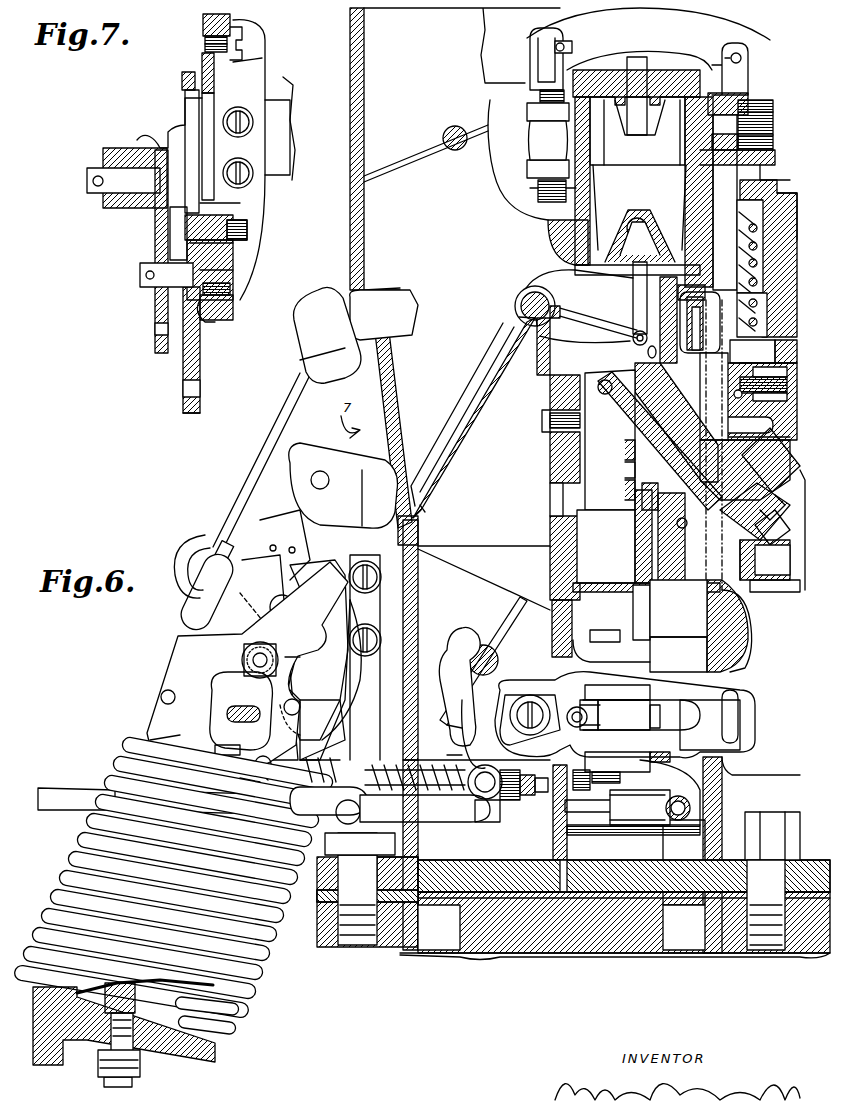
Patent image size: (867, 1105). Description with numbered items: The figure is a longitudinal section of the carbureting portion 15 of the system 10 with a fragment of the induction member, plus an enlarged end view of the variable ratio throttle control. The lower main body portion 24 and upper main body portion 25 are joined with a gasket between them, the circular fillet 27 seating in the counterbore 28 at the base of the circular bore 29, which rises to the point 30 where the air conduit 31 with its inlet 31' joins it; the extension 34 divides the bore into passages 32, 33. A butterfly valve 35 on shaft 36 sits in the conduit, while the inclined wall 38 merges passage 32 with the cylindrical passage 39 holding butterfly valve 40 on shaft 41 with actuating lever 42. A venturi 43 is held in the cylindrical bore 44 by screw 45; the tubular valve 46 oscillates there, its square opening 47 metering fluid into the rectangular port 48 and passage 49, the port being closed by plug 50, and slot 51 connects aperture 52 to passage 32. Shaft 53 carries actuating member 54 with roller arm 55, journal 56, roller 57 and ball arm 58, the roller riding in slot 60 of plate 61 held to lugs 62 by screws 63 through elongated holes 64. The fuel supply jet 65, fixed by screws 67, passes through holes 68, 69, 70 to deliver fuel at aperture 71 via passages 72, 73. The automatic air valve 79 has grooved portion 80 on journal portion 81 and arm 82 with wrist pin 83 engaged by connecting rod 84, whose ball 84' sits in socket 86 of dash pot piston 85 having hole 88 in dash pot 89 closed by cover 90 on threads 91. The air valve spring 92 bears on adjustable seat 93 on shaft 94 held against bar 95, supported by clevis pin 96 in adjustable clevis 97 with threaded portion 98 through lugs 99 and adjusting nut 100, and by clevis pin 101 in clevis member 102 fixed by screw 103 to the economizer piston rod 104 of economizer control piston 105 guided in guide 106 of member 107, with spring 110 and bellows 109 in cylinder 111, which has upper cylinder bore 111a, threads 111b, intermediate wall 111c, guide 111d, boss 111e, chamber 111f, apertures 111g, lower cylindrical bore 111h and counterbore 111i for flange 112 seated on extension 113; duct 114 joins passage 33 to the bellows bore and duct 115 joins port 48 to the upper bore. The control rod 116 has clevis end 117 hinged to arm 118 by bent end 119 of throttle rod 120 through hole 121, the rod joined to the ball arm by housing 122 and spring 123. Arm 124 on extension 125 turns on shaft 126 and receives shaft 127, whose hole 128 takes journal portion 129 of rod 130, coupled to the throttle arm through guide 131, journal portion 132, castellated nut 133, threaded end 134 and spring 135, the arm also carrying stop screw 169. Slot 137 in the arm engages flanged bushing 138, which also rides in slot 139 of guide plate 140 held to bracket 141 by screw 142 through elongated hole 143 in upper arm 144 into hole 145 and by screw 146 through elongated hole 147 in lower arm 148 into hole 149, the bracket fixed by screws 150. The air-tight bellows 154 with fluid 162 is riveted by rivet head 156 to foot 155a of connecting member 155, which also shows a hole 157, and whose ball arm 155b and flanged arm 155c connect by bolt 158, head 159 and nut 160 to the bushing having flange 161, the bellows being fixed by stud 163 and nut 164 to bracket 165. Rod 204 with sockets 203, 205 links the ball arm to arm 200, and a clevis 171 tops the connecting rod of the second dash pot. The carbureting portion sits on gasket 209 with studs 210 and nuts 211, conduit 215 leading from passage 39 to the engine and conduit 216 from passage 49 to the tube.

In FIG. 6, the cutout assembly 10 is at (790, 638).
In FIG. 7, the carbureting portion 15 is at (272, 375).
In FIG. 6, the lower main body portion 24 is at (720, 770).
In FIG. 6, the upper main body portion 25 is at (350, 214).
In FIG. 6, the circular fillet 27 is at (650, 570).
In FIG. 6, the counterbore 28 is at (645, 553).
In FIG. 6, the circular bore 29 is at (633, 322).
In FIG. 6, the junction point 30 is at (465, 392).
In FIG. 6, the air conduit 31 is at (401, 234).
In FIG. 6, the inlet 31' is at (462, 45).
In FIG. 6, the passage 32 is at (457, 486).
In FIG. 6, the passage 33 is at (560, 282).
In FIG. 6, the extension 34 is at (540, 370).
In FIG. 6, the butterfly valve 35 is at (400, 160).
In FIG. 6, the shaft 36 is at (456, 126).
In FIG. 6, the inclined wall 38 is at (484, 578).
In FIG. 6, the cylindrical passage 39 is at (484, 737).
In FIG. 6, the butterfly valve 40 is at (510, 615).
In FIG. 6, the shaft 41 is at (483, 645).
In FIG. 6, the actuating lever 42 is at (447, 650).
In FIG. 6, the venturi 43 is at (587, 443).
In FIG. 6, the cylindrical bore 44 is at (548, 386).
In FIG. 6, the screw 45 is at (543, 428).
In FIG. 6, the tubular valve 46 is at (575, 585).
In FIG. 6, the opening 47 is at (637, 600).
In FIG. 6, the port 48 is at (678, 608).
In FIG. 6, the passage 49 is at (678, 771).
In FIG. 6, the plug 50 is at (742, 635).
In FIG. 6, the slot 51 is at (553, 497).
In FIG. 6, the aperture 52 is at (635, 520).
In FIG. 6, the shaft 53 is at (600, 628).
In FIG. 6, the actuating member 54 is at (617, 726).
In FIG. 6, the roller arm 55 is at (598, 708).
In FIG. 6, the journal 56 is at (570, 718).
In FIG. 6, the roller 57 is at (600, 726).
In FIG. 6, the ball arm 58 is at (655, 723).
In FIG. 6, the slot 60 is at (690, 724).
In FIG. 6, the plate 61 is at (740, 702).
In FIG. 6, the lugs 62 is at (515, 700).
In FIG. 6, the screws 63 is at (535, 700).
In FIG. 6, the elongated holes 64 is at (540, 735).
In FIG. 6, the fuel supply jet 65 is at (625, 383).
In FIG. 6, the screws 67 is at (782, 500).
In FIG. 6, the hole 68 is at (630, 485).
In FIG. 6, the hole 69 is at (630, 468).
In FIG. 6, the hole 70 is at (630, 450).
In FIG. 6, the aperture 71 is at (606, 396).
In FIG. 6, the passages 72 is at (765, 470).
In FIG. 6, the passage 73 is at (752, 555).
In FIG. 6, the automatic air valve 79 is at (520, 420).
In FIG. 6, the grooved portion 80 is at (552, 305).
In FIG. 6, the journal portion 81 is at (520, 305).
In FIG. 6, the arm 82 is at (590, 322).
In FIG. 6, the wrist pin 83 is at (632, 337).
In FIG. 6, the connecting rod 84 is at (637, 274).
In FIG. 6, the ball 84' is at (639, 227).
In FIG. 6, the dash pot piston 85 is at (603, 190).
In FIG. 6, the socket 86 is at (650, 215).
In FIG. 6, the hole 88 is at (640, 210).
In FIG. 6, the dash pot 89 is at (672, 140).
In FIG. 6, the cover 90 is at (720, 40).
In FIG. 6, the threads 91 is at (610, 80).
In FIG. 6, the air valve spring 92 is at (605, 150).
In FIG. 6, the adjustable seat 93 is at (632, 135).
In FIG. 6, the shaft 94 is at (648, 65).
In FIG. 6, the bar 95 is at (690, 28).
In FIG. 6, the clevis pin 96 is at (572, 47).
In FIG. 6, the adjustable clevis 97 is at (530, 64).
In FIG. 6, the threaded portion 98 is at (527, 98).
In FIG. 6, the lugs 99 is at (530, 120).
In FIG. 6, the adjusting nut 100 is at (532, 142).
In FIG. 6, the clevis pin 101 is at (748, 58).
In FIG. 6, the clevis member 102 is at (752, 83).
In FIG. 6, the screw 103 is at (772, 118).
In FIG. 6, the economizer piston rod 104 is at (740, 160).
In FIG. 6, the economizer control piston 105 is at (763, 351).
In FIG. 6, the guide 106 is at (768, 172).
In FIG. 6, the member 107 is at (782, 190).
In FIG. 6, the air-tight bellows 109 is at (748, 417).
In FIG. 6, the spring 110 is at (765, 290).
In FIG. 6, the cylinder 111 is at (782, 455).
In FIG. 6, the upper cylinder bore 111a is at (770, 312).
In FIG. 6, the threads 111b is at (786, 222).
In FIG. 6, the intermediate wall 111c is at (770, 385).
In FIG. 6, the guide 111d is at (740, 396).
In FIG. 6, the boss 111e is at (772, 396).
In FIG. 6, the chamber 111f is at (775, 358).
In FIG. 6, the apertures 111g is at (780, 372).
In FIG. 6, the lower cylindrical bore 111h is at (775, 428).
In FIG. 6, the counterbore 111i is at (775, 590).
In FIG. 6, the flange 112 is at (778, 515).
In FIG. 6, the extension 113 is at (800, 590).
In FIG. 6, the duct 114 is at (648, 353).
In FIG. 6, the duct 115 is at (680, 300).
In FIG. 6, the control rod 116 is at (70, 800).
In FIG. 6, the clevis end 117 is at (329, 801).
In FIG. 7, the arm 118 is at (211, 362).
In FIG. 6, the arm 118 is at (173, 560).
In FIG. 6, the bent end 119 is at (358, 815).
In FIG. 6, the throttle rod 120 is at (585, 810).
In FIG. 7, the hole 121 is at (199, 388).
In FIG. 6, the housing 122 is at (625, 830).
In FIG. 6, the spring 123 is at (655, 790).
In FIG. 7, the arm 124 is at (156, 247).
In FIG. 6, the arm 124 is at (264, 758).
In FIG. 7, the extension 125 is at (138, 140).
In FIG. 6, the extension 125 is at (323, 650).
In FIG. 7, the shaft 126 is at (115, 180).
In FIG. 6, the shaft 126 is at (290, 550).
In FIG. 7, the shaft 127 is at (140, 275).
In FIG. 6, the shaft 127 is at (298, 712).
In FIG. 7, the hole 128 is at (156, 330).
In FIG. 6, the hole 128 is at (262, 790).
In FIG. 6, the journal portion 129 is at (258, 782).
In FIG. 6, the rod 130 is at (383, 762).
In FIG. 6, the guide 131 is at (483, 830).
In FIG. 6, the journal portion 132 is at (487, 805).
In FIG. 6, the castellated nut 133 is at (512, 808).
In FIG. 6, the threaded end 134 is at (530, 808).
In FIG. 6, the spring 135 is at (447, 748).
In FIG. 7, the slot 137 is at (182, 90).
In FIG. 6, the slot 137 is at (192, 548).
In FIG. 7, the flanged bushing 138 is at (233, 212).
In FIG. 7, the slot 139 is at (215, 100).
In FIG. 6, the slot 139 is at (273, 548).
In FIG. 7, the guide plate 140 is at (205, 20).
In FIG. 6, the guide plate 140 is at (283, 512).
In FIG. 7, the bracket 141 is at (290, 148).
In FIG. 6, the bracket 141 is at (366, 649).
In FIG. 7, the screw 142 is at (205, 46).
In FIG. 6, the screw 142 is at (318, 462).
In FIG. 7, the elongated hole 143 is at (235, 63).
In FIG. 6, the elongated hole 143 is at (325, 498).
In FIG. 7, the upper arm 144 is at (255, 50).
In FIG. 6, the upper arm 144 is at (375, 483).
In FIG. 7, the hole 145 is at (205, 38).
In FIG. 7, the screw 146 is at (232, 293).
In FIG. 7, the elongated hole 147 is at (233, 305).
In FIG. 7, the lower arm 148 is at (236, 275).
In FIG. 6, the lower arm 148 is at (330, 720).
In FIG. 7, the hole 149 is at (205, 318).
In FIG. 7, the screws 150 is at (262, 152).
In FIG. 6, the screws 150 is at (372, 602).
In FIG. 6, the air-tight bellows 154 is at (80, 858).
In FIG. 6, the connecting member 155 is at (185, 685).
In FIG. 6, the foot 155a is at (155, 733).
In FIG. 6, the ball arm 155b is at (190, 628).
In FIG. 7, the flanged arm 155c is at (236, 258).
In FIG. 6, the flanged arm 155c is at (215, 650).
In FIG. 6, the rivet head 156 is at (218, 745).
In FIG. 6, the hole 157 is at (161, 697).
In FIG. 7, the bolt 158 is at (247, 228).
In FIG. 6, the bolt 158 is at (295, 660).
In FIG. 7, the head 159 is at (172, 222).
In FIG. 7, the nut 160 is at (236, 243).
In FIG. 6, the nut 160 is at (243, 660).
In FIG. 7, the flange 161 is at (220, 203).
In FIG. 6, the fluid 162 is at (215, 993).
In FIG. 6, the stud 163 is at (112, 1088).
In FIG. 6, the nut 164 is at (140, 1070).
In FIG. 6, the bracket 165 is at (232, 1068).
In FIG. 6, the stop screw 169 is at (447, 733).
In FIG. 6, the clevis 171 is at (553, 238).
In FIG. 6, the arm 200 is at (384, 315).
In FIG. 6, the socket 203 is at (328, 335).
In FIG. 6, the rod 204 is at (265, 449).
In FIG. 6, the socket 205 is at (188, 598).
In FIG. 6, the gasket 209 is at (317, 905).
In FIG. 6, the studs 210 is at (390, 873).
In FIG. 6, the nuts 211 is at (352, 870).
In FIG. 6, the conduit 215 is at (456, 930).
In FIG. 6, the conduit 216 is at (671, 930).